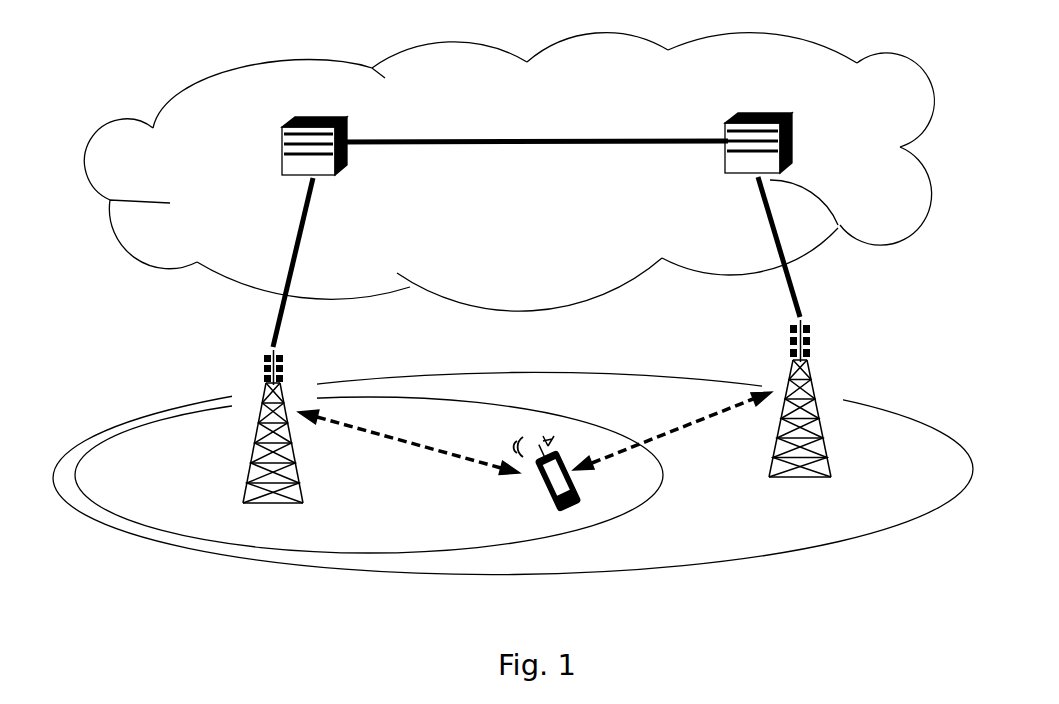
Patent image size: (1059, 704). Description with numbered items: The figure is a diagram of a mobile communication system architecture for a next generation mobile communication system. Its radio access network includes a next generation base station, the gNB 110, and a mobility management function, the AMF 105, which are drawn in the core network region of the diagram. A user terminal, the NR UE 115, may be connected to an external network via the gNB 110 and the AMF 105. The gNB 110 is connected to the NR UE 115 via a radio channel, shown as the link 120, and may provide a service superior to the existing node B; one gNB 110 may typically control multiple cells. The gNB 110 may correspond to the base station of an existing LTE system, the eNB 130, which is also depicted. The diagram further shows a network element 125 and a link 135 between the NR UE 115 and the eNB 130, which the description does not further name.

The mobility management function 105 is at (300, 155).
The MME (mobility management entity) 125 is at (742, 151).
The next generation base station 110 is at (259, 443).
The base station 130 is at (788, 415).
The user terminal 115 is at (537, 485).
The NR link between gNB and UE 120 is at (409, 440).
The LTE link between UE and eNB 135 is at (672, 431).